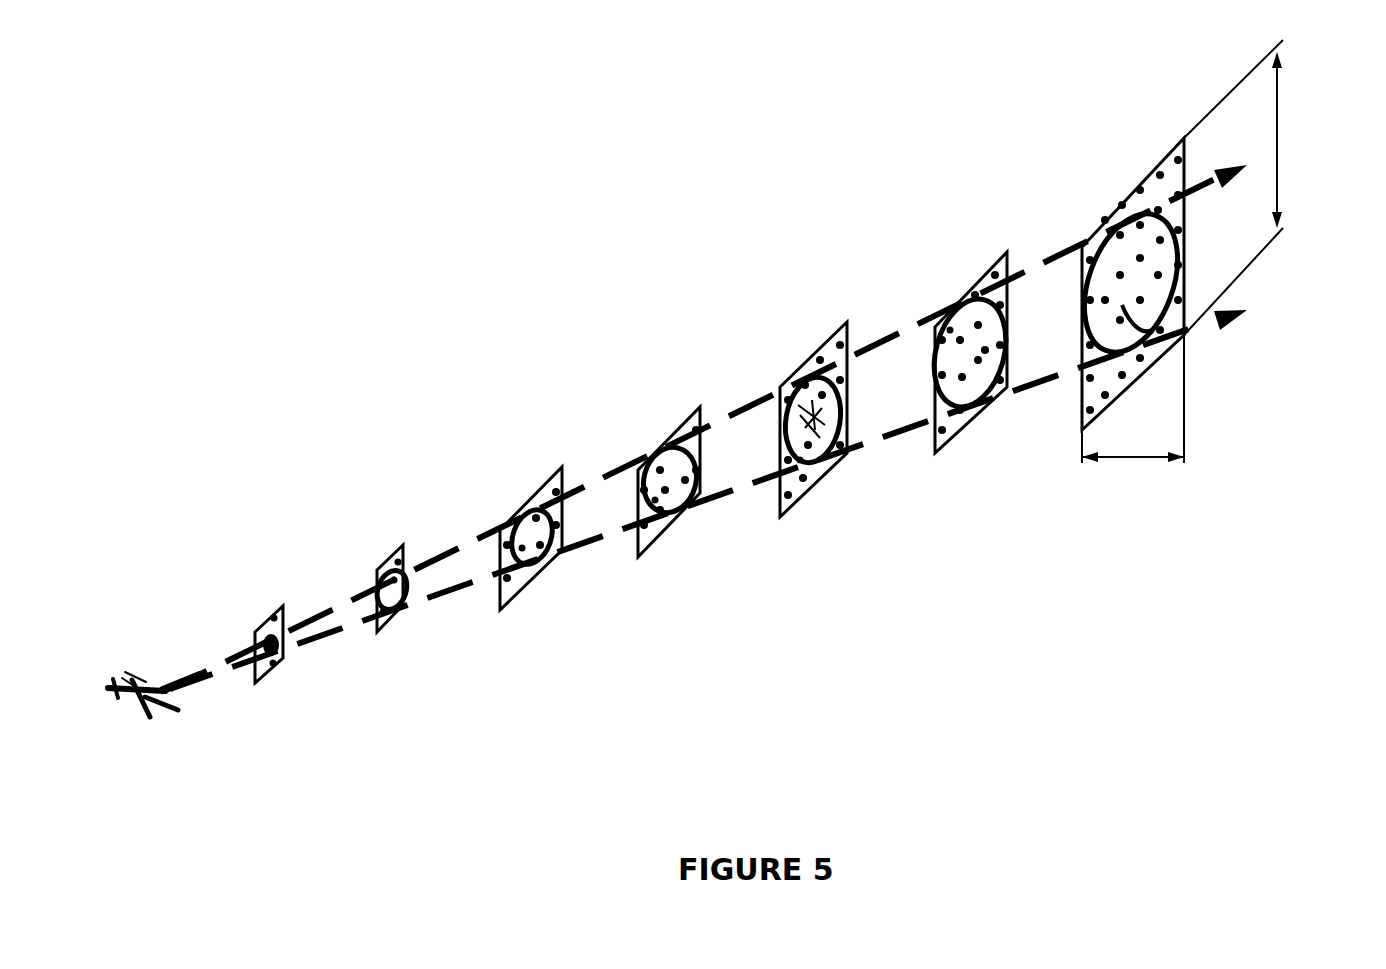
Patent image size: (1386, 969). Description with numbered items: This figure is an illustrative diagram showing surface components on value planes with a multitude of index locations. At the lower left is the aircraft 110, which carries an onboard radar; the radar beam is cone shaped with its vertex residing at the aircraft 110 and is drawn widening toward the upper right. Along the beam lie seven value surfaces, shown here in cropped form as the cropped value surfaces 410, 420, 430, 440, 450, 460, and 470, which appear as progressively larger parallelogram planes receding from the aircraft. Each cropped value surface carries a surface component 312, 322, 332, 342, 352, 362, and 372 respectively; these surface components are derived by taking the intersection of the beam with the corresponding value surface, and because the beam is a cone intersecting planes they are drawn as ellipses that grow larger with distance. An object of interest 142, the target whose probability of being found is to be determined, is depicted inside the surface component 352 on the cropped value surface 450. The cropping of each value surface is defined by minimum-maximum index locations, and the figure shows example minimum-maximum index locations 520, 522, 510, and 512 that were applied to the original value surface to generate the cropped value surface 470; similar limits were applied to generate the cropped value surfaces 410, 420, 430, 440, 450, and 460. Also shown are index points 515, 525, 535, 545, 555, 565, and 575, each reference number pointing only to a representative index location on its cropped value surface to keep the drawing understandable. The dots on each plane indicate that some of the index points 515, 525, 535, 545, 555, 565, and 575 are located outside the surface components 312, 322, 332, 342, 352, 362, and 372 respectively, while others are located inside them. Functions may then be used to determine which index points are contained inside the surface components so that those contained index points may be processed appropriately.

The aircraft 110 is at (143, 692).
The object of interest 142 is at (832, 432).
The surface component 312 is at (268, 665).
The surface component 322 is at (403, 568).
The surface component 332 is at (524, 522).
The surface component 342 is at (690, 445).
The surface component 352 is at (810, 382).
The surface component 362 is at (1007, 318).
The surface component 372 is at (1107, 223).
The cropped value surface 410 is at (254, 640).
The cropped value surface 420 is at (387, 572).
The cropped value surface 430 is at (511, 527).
The cropped value surface 440 is at (648, 460).
The cropped value surface 450 is at (792, 390).
The cropped value surface 460 is at (995, 317).
The cropped value surface 470 is at (1098, 227).
The minimum-maximum index location 510 is at (1082, 457).
The minimum-maximum index location 512 is at (1184, 457).
The index point 515 is at (270, 673).
The minimum-maximum index location 520 is at (1277, 55).
The minimum-maximum index location 522 is at (1277, 224).
The index point 525 is at (400, 620).
The index point 535 is at (548, 548).
The index point 545 is at (680, 513).
The index point 555 is at (818, 455).
The index point 565 is at (1001, 400).
The index point 575 is at (1148, 325).